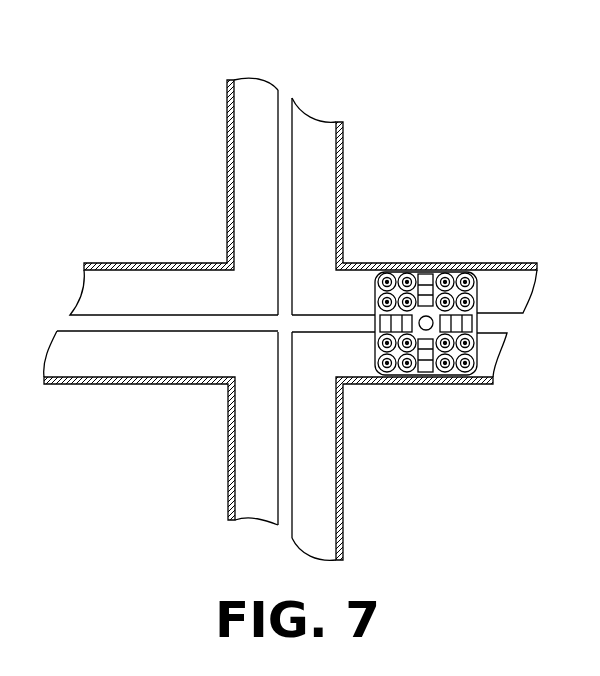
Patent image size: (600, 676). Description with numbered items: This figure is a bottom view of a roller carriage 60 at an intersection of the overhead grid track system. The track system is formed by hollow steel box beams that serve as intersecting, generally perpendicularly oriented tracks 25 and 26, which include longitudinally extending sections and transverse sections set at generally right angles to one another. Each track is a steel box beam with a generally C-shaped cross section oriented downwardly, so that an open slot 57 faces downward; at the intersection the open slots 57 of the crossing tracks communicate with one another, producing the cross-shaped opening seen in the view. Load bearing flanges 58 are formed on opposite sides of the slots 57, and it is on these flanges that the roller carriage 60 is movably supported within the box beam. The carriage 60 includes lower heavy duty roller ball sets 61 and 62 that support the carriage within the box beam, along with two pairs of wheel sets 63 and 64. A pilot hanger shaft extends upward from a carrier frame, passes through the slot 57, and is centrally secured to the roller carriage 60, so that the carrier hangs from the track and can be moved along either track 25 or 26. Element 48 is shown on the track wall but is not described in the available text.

The track 25 is at (161, 300).
The track 26 is at (345, 196).
The tube wall 48 is at (188, 282).
The open slot 57 is at (278, 165).
The load bearing flange 58 is at (250, 88).
The roller carriage 60 is at (462, 327).
The lower heavy duty roller ball set 61 is at (403, 272).
The lower heavy duty roller ball set 62 is at (403, 384).
The wheel set 63 is at (432, 272).
The wheel set 64 is at (440, 384).